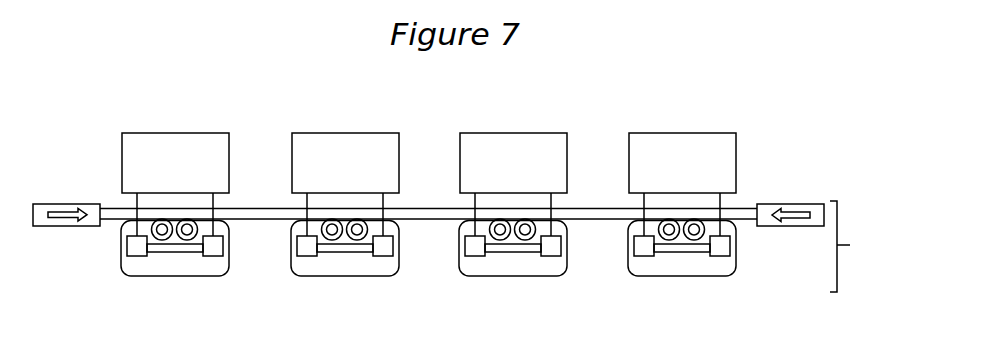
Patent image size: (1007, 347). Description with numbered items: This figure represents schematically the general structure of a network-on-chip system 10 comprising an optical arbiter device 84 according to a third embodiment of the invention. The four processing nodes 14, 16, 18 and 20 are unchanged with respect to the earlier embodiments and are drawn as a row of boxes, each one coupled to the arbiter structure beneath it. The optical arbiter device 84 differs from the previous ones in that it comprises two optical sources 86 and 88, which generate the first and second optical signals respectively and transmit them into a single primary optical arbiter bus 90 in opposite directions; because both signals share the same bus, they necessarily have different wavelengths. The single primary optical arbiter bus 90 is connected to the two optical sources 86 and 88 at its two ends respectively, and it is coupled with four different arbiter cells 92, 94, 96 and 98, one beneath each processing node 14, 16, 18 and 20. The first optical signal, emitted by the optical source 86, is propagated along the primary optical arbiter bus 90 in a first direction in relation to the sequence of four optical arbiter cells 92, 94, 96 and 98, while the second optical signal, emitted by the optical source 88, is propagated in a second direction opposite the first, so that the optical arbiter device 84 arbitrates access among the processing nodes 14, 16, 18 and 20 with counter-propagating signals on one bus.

The network-on-chip system 10 is at (690, 88).
The processing node 14 is at (175, 163).
The processing node 16 is at (345, 163).
The processing node 18 is at (513, 163).
The processing node 20 is at (682, 163).
The optical arbiter device 84 is at (855, 246).
The optical source 86 is at (53, 226).
The optical source 88 is at (808, 227).
The primary optical arbiter bus 90 is at (742, 203).
The arbiter cell 92 is at (121, 259).
The arbiter cell 94 is at (291, 259).
The arbiter cell 96 is at (459, 259).
The arbiter cell 98 is at (628, 260).